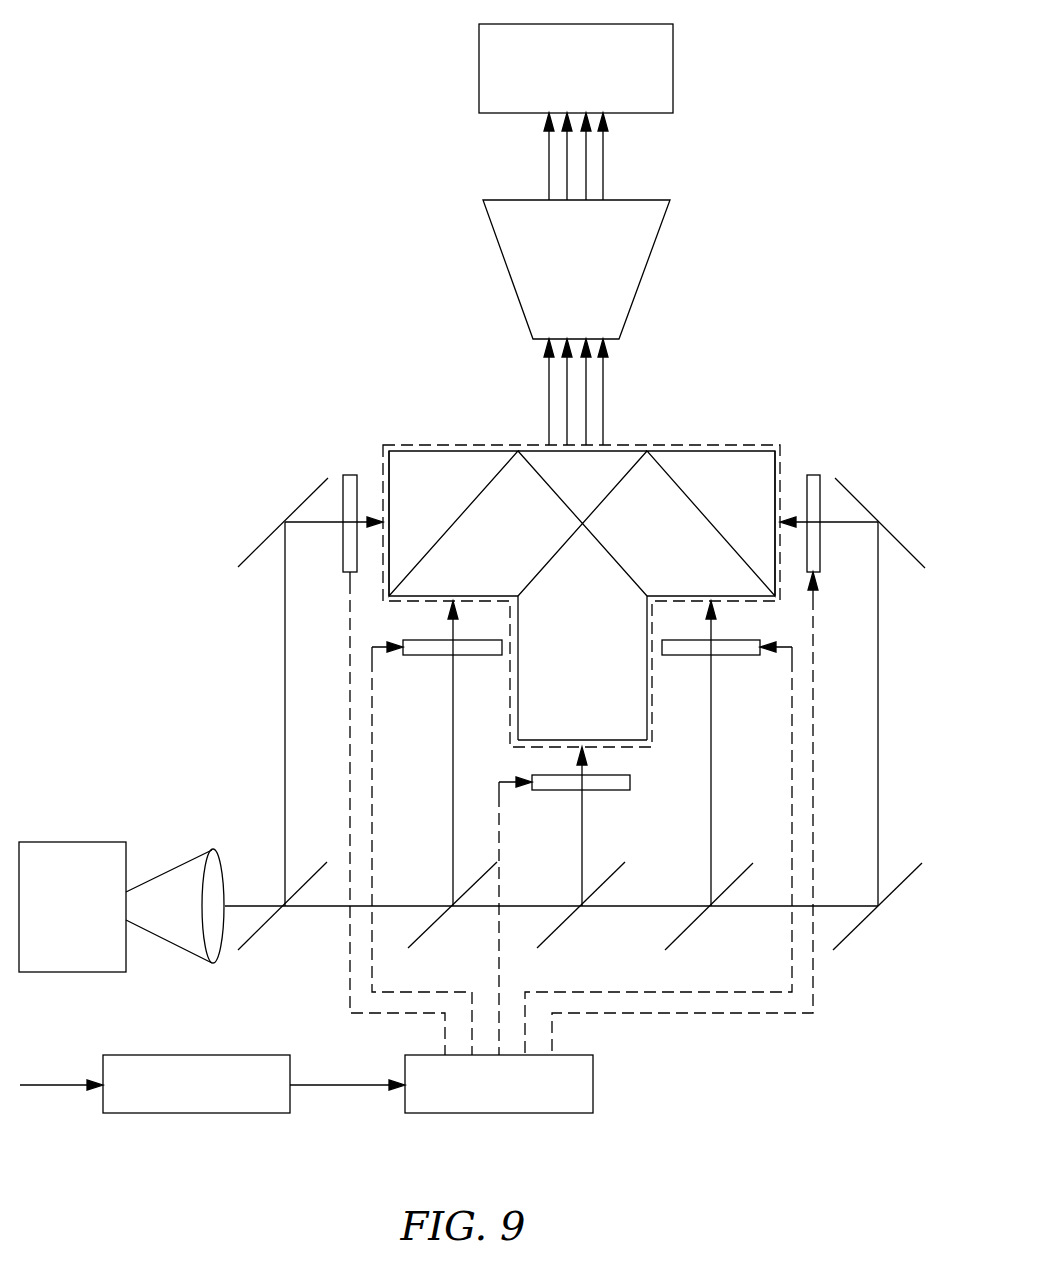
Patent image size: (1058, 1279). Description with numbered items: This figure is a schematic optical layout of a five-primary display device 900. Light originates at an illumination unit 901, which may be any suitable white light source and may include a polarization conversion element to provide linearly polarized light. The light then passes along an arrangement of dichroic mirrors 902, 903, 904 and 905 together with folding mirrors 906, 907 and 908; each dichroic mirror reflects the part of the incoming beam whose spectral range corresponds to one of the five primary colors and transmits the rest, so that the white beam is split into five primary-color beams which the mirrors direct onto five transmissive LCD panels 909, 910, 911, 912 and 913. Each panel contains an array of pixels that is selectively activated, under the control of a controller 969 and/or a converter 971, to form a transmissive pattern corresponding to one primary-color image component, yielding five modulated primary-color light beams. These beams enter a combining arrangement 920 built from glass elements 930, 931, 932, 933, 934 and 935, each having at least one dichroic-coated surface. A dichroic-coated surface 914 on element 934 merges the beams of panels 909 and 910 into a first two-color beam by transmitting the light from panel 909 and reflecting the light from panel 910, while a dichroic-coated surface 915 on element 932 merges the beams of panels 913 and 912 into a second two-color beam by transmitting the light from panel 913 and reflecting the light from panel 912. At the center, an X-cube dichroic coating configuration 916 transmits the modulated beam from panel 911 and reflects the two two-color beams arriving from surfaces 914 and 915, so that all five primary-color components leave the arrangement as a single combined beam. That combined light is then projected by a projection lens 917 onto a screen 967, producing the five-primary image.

The five-primary display device 900 is at (192, 120).
The illumination unit 901 is at (70, 842).
The dichroic mirror 902 is at (270, 923).
The dichroic mirror 903 is at (437, 922).
The dichroic mirror 904 is at (563, 922).
The dichroic mirror 905 is at (695, 923).
The folding mirror 906 is at (297, 510).
The folding mirror 907 is at (863, 923).
The folding mirror 908 is at (913, 543).
The transmissive LCD panel 909 is at (346, 475).
The transmissive LCD panel 910 is at (425, 655).
The transmissive LCD panel 911 is at (553, 790).
The transmissive LCD panel 912 is at (723, 657).
The transmissive LCD panel 913 is at (815, 475).
The dichroic-coated surface 914 is at (442, 500).
The dichroic-coated surface 915 is at (682, 487).
The X-cube dichroic coating configuration 916 is at (584, 518).
The projection lens 917 is at (653, 245).
The combining arrangement 920 is at (759, 434).
The glass element 930 is at (602, 727).
The glass element 931 is at (722, 580).
The glass element 932 is at (743, 505).
The glass element 933 is at (460, 562).
The glass element 934 is at (485, 483).
The glass element 935 is at (552, 473).
The screen 967 is at (673, 66).
The controller 969 is at (500, 1113).
The converter 971 is at (197, 1113).